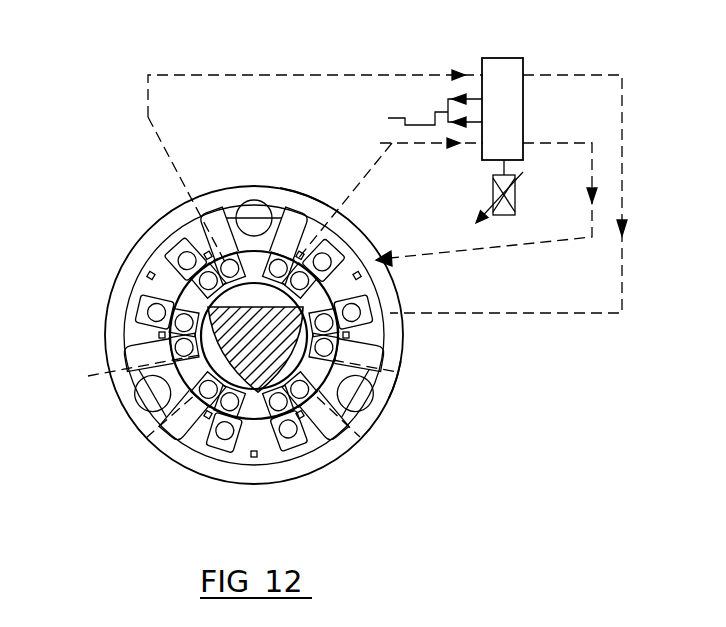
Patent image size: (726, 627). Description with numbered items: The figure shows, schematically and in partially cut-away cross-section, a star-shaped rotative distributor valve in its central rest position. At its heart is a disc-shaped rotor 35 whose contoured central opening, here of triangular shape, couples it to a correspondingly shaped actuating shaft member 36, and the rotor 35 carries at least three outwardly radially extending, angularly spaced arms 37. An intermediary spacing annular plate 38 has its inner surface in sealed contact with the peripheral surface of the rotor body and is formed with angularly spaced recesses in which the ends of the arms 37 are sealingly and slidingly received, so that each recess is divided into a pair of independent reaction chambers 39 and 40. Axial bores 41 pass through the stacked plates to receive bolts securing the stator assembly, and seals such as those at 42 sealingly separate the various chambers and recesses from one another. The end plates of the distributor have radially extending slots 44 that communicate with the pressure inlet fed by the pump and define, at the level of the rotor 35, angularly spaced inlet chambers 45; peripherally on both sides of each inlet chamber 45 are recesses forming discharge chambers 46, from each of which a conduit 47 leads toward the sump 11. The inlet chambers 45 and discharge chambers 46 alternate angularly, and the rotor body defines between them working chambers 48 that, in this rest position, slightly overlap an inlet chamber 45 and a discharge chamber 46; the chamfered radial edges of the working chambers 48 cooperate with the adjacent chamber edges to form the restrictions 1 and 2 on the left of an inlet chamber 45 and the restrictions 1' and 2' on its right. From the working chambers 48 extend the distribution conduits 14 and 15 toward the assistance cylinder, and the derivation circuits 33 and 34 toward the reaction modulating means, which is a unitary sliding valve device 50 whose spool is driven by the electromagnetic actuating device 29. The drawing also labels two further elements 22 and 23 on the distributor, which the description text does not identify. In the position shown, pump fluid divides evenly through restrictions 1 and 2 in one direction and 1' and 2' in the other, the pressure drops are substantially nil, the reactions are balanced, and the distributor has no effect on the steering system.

The restriction 1 is at (254, 307).
The restriction 1' is at (305, 163).
The restriction 2 is at (123, 269).
The restriction 2' is at (387, 273).
The sump 11 is at (420, 110).
The distribution conduit 14 is at (186, 248).
The distribution conduit 15 is at (315, 210).
The piston 22 is at (380, 327).
The piston 23 is at (338, 238).
The actuating device 29 is at (516, 207).
The derivation circuit 33 is at (146, 103).
The derivation circuit 34 is at (420, 147).
The rotor 35 is at (160, 303).
The actuating shaft member 36 is at (383, 348).
The arm 37 is at (380, 260).
The intermediary spacing annular plate 38 is at (393, 365).
The reaction chamber 39 is at (217, 445).
The reaction chamber 40 is at (281, 448).
The axial bore 41 is at (366, 400).
The seal 42 is at (205, 414).
The radially extending slot 44 is at (234, 187).
The inlet chamber 45 is at (272, 200).
The discharge chamber 46 is at (170, 285).
The conduit 47 is at (158, 352).
The working chamber 48 is at (213, 210).
The sliding valve device 50 is at (538, 58).